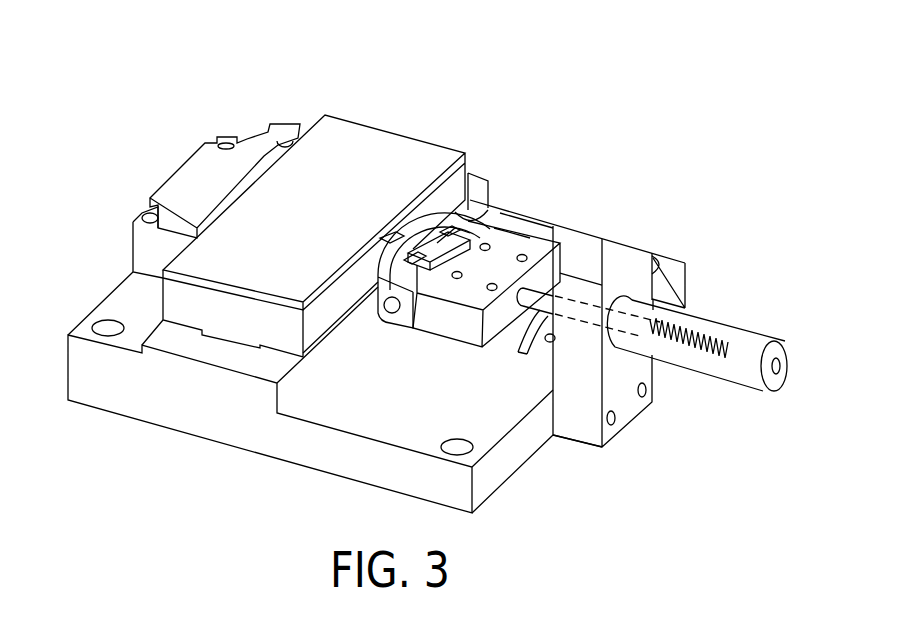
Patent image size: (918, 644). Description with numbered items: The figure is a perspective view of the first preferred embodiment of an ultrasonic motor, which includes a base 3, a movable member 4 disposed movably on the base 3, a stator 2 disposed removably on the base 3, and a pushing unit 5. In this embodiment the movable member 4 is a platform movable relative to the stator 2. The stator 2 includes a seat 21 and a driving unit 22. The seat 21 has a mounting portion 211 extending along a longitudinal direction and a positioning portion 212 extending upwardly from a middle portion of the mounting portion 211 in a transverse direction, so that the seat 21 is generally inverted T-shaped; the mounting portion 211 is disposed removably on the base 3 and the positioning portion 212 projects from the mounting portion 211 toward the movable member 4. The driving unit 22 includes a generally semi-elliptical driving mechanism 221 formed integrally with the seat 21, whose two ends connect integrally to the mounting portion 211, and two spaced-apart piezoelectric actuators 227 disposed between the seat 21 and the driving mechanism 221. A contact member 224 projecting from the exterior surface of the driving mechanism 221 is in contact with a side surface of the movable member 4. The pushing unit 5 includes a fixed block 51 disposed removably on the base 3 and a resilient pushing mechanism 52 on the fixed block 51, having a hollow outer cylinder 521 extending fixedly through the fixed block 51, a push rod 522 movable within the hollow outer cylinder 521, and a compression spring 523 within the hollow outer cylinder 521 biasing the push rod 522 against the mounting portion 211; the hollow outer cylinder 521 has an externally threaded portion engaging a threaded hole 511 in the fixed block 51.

The stator 2 is at (535, 203).
The base 3 is at (171, 430).
The movable member 4 is at (335, 128).
The pushing unit 5 is at (603, 474).
The seat 21 is at (563, 231).
The driving unit 22 is at (482, 206).
The fixed block 51 is at (628, 425).
The resilient pushing mechanism 52 is at (707, 303).
The mounting portion 211 is at (523, 233).
The positioning portion 212 is at (417, 243).
The driving mechanism 221 is at (386, 338).
The contact member 224 is at (378, 235).
The piezoelectric actuators 227 is at (443, 232).
The threaded hole 511 is at (623, 307).
The hollow outer cylinder 521 is at (748, 333).
The push rod 522 is at (513, 327).
The compression spring 523 is at (705, 365).